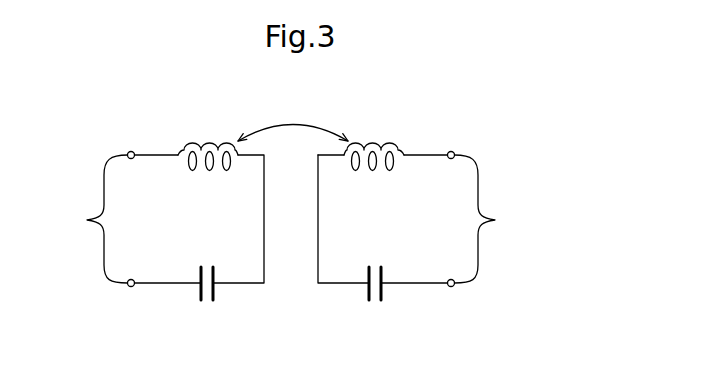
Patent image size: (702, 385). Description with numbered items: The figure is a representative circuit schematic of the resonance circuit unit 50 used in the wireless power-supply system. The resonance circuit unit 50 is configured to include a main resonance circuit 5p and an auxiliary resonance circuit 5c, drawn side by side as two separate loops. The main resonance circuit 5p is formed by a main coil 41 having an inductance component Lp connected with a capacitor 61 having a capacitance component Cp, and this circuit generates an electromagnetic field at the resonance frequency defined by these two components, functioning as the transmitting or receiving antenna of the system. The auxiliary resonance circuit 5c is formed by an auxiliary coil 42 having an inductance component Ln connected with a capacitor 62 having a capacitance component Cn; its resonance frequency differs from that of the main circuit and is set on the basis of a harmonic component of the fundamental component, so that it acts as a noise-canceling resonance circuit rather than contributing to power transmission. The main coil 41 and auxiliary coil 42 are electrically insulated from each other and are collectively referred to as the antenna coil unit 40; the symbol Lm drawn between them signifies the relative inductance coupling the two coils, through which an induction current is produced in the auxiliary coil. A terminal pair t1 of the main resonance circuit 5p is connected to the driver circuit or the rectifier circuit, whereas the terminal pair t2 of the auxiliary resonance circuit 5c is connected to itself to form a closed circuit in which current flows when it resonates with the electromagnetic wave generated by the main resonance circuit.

The resonance circuit unit 50 is at (344, 96).
The main resonance circuit 5p is at (185, 107).
The auxiliary resonance circuit 5c is at (405, 110).
The antenna coil unit 40 is at (290, 177).
The main coil 41 is at (207, 175).
The auxiliary coil 42 is at (375, 175).
The capacitor 61 is at (207, 306).
The capacitor 62 is at (374, 306).
The terminal pair t1 is at (97, 219).
The terminal pair t2 is at (485, 219).
The relative inductance Lm is at (293, 118).